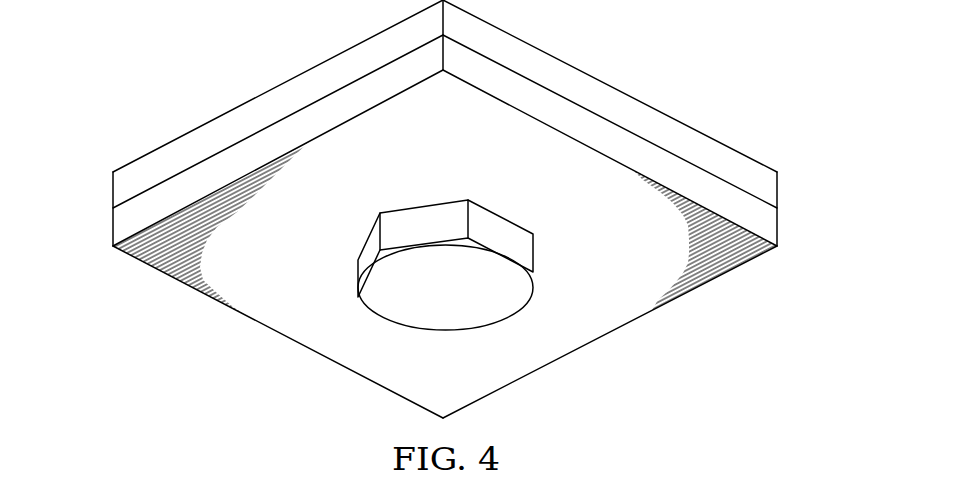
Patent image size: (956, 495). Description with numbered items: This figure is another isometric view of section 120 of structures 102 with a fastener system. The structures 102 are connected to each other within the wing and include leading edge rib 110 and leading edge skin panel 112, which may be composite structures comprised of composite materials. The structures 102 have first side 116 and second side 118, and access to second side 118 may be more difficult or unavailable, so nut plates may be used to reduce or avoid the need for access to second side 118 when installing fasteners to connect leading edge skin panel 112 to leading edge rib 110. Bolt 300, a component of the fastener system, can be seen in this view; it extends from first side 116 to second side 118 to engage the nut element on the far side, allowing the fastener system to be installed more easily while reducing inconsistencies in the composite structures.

The structures 102 is at (251, 351).
The leading edge rib 110 is at (120, 192).
The leading edge skin panel 112 is at (768, 229).
The first side 116 is at (608, 326).
The second side 118 is at (609, 100).
The section 120 is at (242, 91).
The bolt 300 is at (497, 223).